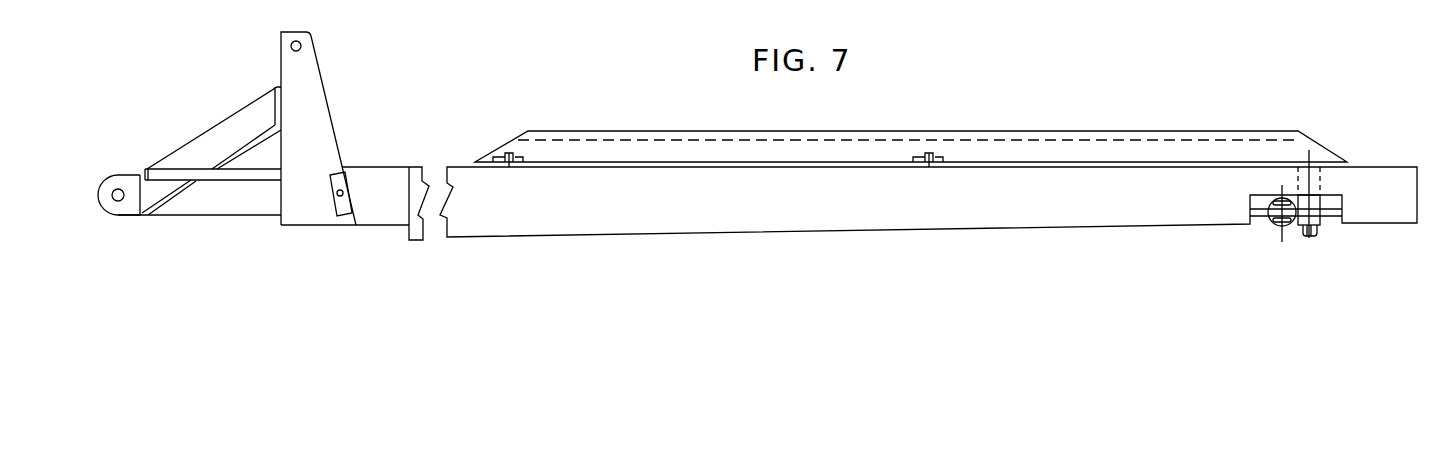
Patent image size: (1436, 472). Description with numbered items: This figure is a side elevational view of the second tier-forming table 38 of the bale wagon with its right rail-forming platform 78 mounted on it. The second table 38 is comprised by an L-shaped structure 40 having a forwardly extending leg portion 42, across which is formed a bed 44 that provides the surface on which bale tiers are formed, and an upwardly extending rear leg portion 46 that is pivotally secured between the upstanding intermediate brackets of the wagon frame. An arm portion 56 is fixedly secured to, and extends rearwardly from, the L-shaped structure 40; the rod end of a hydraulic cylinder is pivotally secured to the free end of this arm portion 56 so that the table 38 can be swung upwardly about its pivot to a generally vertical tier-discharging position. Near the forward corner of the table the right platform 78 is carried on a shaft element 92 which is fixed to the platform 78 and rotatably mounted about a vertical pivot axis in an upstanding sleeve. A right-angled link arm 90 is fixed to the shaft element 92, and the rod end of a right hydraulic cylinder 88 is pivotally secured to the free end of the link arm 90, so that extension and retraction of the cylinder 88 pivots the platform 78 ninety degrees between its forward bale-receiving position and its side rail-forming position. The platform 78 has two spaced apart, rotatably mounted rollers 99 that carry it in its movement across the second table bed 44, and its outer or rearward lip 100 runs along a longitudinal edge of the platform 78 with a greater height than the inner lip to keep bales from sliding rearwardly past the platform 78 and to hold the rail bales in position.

The second tier-forming table 38 is at (1137, 114).
The L-shaped structure 40 is at (280, 236).
The forwardly extending leg portion 42 is at (378, 220).
The bed 44 is at (1368, 167).
The upwardly extending rear leg portion 46 is at (323, 106).
The arm portion 56 is at (127, 208).
The right rail-forming platform 78 is at (862, 132).
The right hydraulic cylinder 88 is at (1278, 228).
The right-angled link arm 90 is at (1322, 222).
The shaft element 92 is at (1310, 238).
The rollers 99 is at (513, 166).
The outer or rearward lip 100 is at (688, 133).